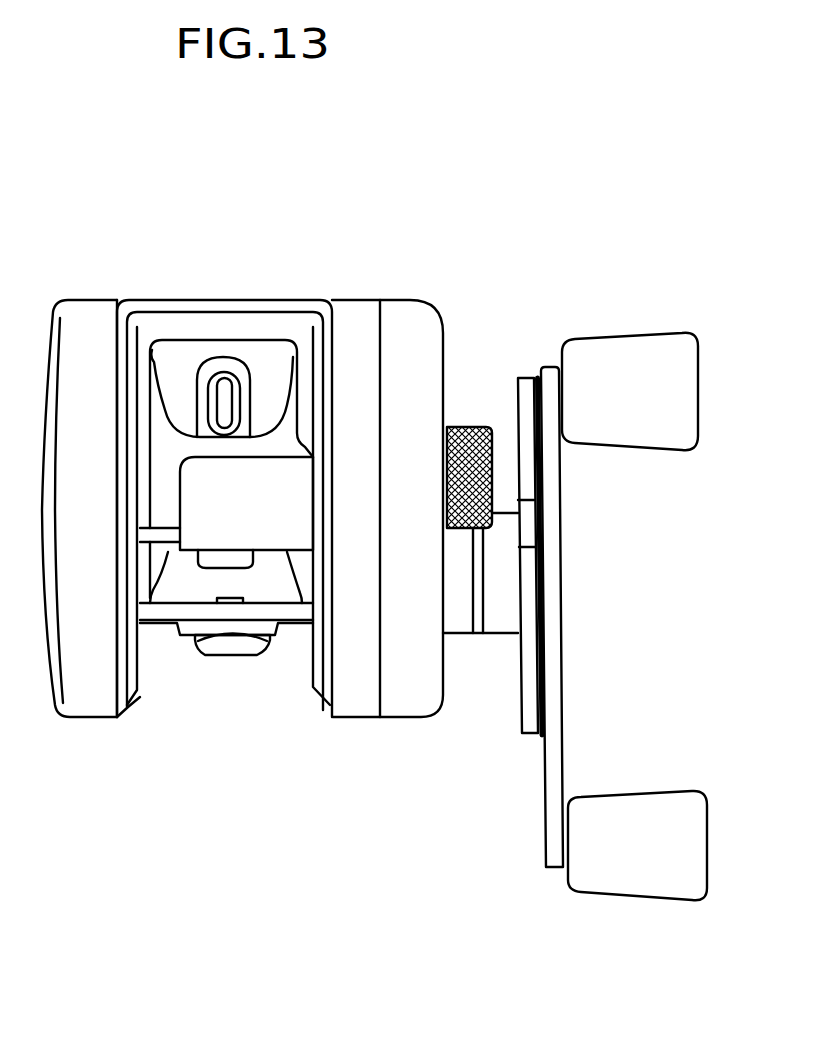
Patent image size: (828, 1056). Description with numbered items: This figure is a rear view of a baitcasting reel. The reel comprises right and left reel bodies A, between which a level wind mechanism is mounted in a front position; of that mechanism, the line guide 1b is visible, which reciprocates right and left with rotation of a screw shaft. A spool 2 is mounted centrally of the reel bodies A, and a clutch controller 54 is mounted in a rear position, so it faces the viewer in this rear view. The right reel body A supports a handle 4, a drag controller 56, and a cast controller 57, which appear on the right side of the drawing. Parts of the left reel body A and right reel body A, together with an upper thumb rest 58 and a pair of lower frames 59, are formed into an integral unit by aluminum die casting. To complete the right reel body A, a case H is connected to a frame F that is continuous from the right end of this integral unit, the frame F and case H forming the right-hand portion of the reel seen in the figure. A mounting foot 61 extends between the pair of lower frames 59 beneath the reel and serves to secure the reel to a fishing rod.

The reel body A is at (78, 297).
The frame F is at (348, 307).
The case H is at (435, 333).
The spool 2 is at (162, 397).
The line guide 1b is at (238, 367).
The handle 4 is at (560, 743).
The clutch controller 54 is at (246, 512).
The drag controller 56 is at (527, 731).
The cast controller 57 is at (468, 426).
The upper thumb rest 58 is at (178, 305).
The lower frame 59 is at (155, 624).
The mounting foot 61 is at (247, 655).